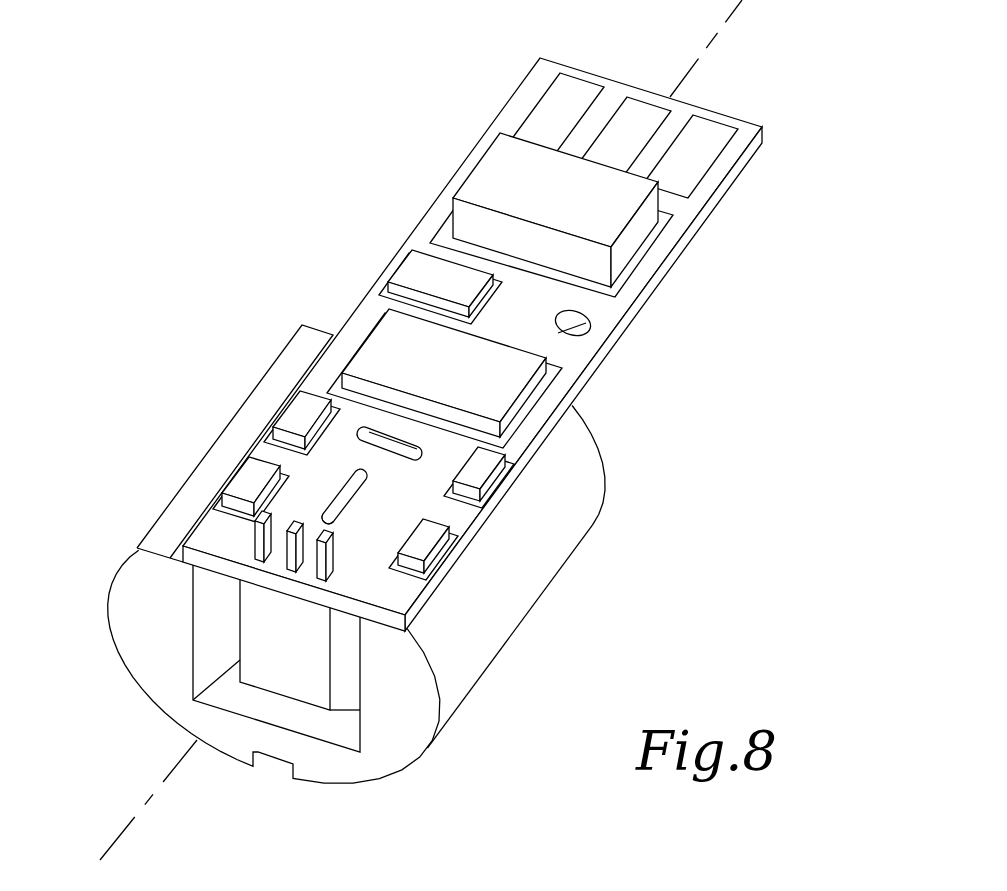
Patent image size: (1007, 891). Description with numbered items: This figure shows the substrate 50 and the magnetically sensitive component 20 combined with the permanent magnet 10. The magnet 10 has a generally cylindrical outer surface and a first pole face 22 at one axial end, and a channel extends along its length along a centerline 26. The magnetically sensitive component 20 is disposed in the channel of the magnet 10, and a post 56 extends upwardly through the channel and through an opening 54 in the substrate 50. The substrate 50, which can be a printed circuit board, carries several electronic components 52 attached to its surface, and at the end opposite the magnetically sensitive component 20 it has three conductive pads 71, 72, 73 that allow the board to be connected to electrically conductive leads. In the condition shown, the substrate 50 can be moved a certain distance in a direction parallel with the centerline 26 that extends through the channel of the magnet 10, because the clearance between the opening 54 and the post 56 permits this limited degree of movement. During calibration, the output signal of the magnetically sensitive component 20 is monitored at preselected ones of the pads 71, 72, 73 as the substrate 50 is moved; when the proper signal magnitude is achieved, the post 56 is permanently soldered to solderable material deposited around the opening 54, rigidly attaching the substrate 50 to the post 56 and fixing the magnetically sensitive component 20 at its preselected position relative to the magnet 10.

The magnet 10 is at (533, 583).
The magnetically sensitive component 20 is at (287, 675).
The first pole face 22 is at (122, 610).
The centerline 26 is at (725, 22).
The substrate 50 is at (590, 350).
The electronic components 52 is at (393, 330).
The opening 54 is at (313, 520).
The post 56 is at (357, 470).
The conductive pad 71 is at (553, 102).
The conductive pad 72 is at (630, 113).
The conductive pad 73 is at (703, 162).